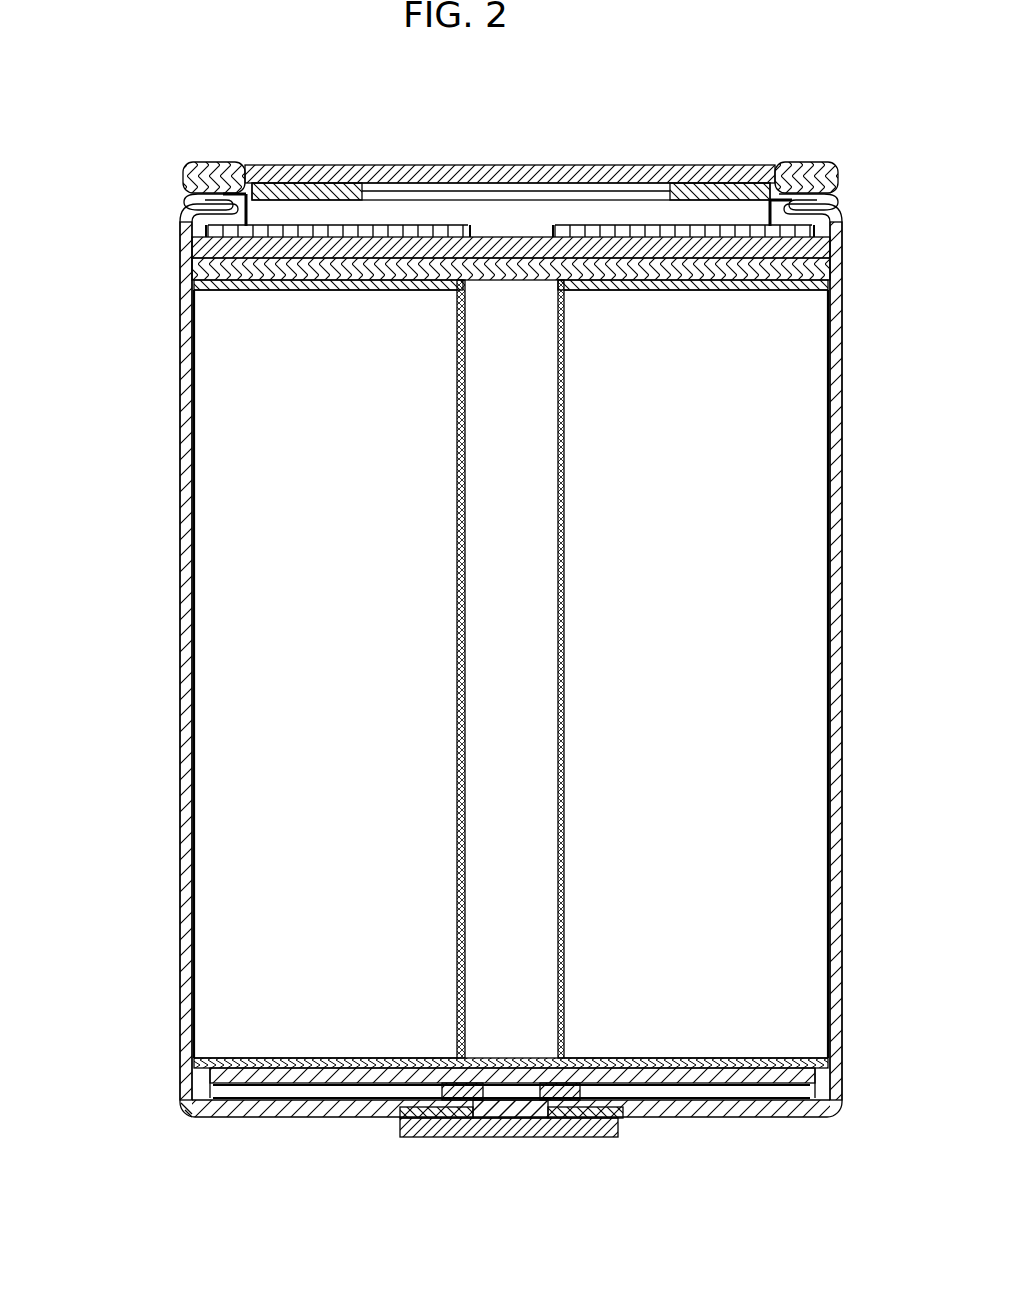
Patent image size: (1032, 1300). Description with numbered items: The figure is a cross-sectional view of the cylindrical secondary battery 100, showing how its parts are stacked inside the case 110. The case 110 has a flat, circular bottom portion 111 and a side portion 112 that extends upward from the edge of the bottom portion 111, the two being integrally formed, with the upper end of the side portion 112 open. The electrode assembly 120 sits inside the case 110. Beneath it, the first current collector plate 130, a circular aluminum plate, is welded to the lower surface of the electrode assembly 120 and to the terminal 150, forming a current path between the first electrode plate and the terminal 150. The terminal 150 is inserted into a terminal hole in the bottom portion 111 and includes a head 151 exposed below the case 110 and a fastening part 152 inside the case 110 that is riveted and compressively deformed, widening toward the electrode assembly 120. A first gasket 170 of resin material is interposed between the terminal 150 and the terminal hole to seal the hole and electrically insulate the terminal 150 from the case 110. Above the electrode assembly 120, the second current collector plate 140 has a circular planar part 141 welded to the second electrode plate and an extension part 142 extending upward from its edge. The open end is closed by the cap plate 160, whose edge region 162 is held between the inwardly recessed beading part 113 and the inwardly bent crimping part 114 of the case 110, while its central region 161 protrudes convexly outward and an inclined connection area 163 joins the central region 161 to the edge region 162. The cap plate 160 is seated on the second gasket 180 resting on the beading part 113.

The cylindrical secondary battery 100 is at (110, 101).
The case 110 is at (181, 516).
The bottom portion 111 is at (315, 1118).
The side portion 112 is at (186, 704).
The beading part 113 is at (190, 206).
The crimping part 114 is at (225, 160).
The electrode assembly 120 is at (210, 870).
The first current collector plate 130 is at (232, 1085).
The second current collector plate 140 is at (84, 311).
The planar part 141 is at (192, 272).
The extension part 142 is at (192, 245).
The terminal 150 is at (528, 1218).
The head 151 is at (425, 1138).
The fastening part 152 is at (510, 1138).
The cap plate 160 is at (818, 92).
The central region 161 is at (683, 165).
The edge region 162 is at (802, 160).
The connection area 163 is at (768, 165).
The first gasket 170 is at (548, 1130).
The second gasket 180 is at (838, 181).